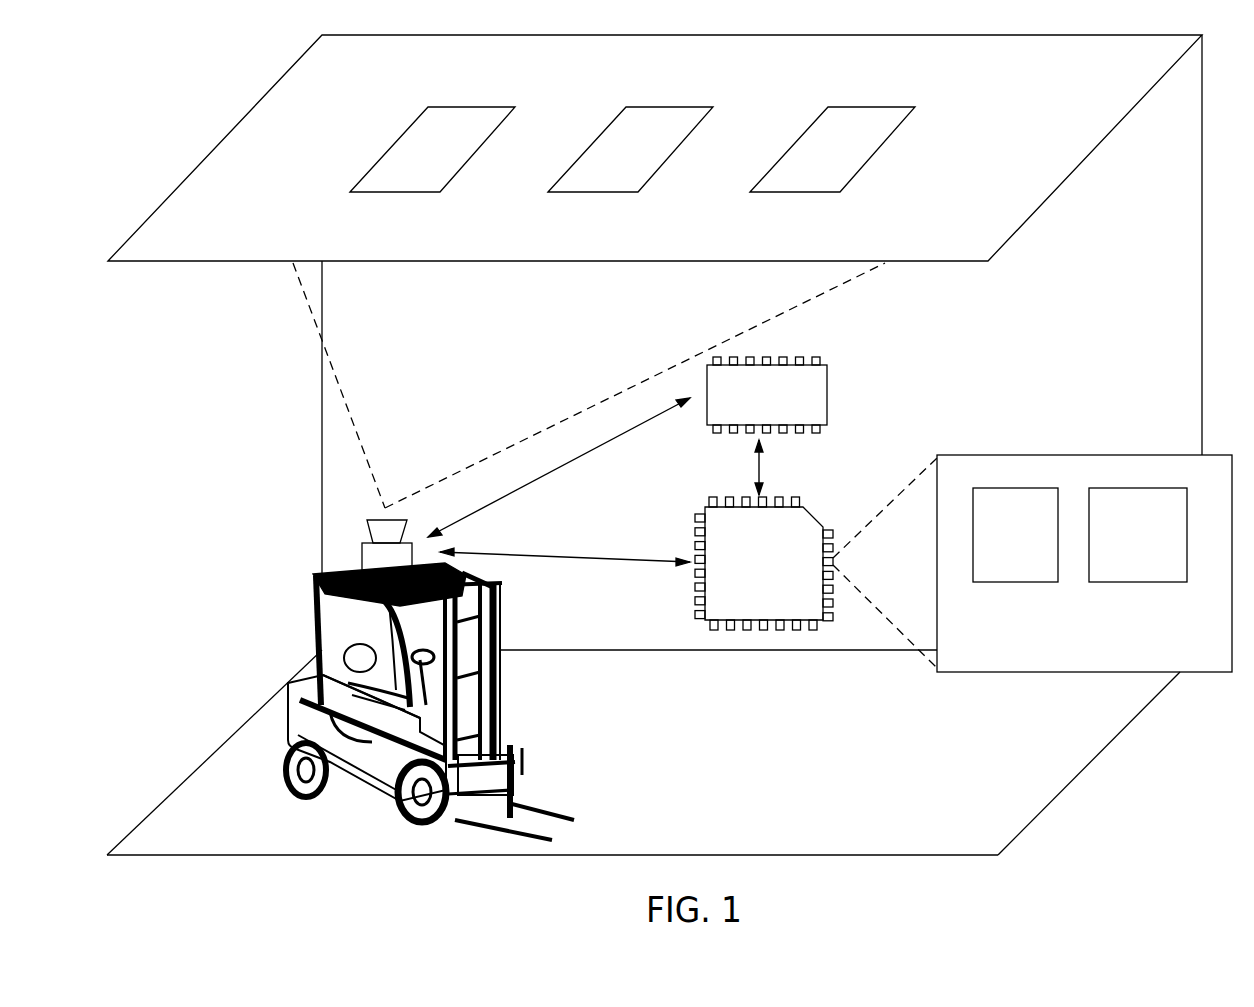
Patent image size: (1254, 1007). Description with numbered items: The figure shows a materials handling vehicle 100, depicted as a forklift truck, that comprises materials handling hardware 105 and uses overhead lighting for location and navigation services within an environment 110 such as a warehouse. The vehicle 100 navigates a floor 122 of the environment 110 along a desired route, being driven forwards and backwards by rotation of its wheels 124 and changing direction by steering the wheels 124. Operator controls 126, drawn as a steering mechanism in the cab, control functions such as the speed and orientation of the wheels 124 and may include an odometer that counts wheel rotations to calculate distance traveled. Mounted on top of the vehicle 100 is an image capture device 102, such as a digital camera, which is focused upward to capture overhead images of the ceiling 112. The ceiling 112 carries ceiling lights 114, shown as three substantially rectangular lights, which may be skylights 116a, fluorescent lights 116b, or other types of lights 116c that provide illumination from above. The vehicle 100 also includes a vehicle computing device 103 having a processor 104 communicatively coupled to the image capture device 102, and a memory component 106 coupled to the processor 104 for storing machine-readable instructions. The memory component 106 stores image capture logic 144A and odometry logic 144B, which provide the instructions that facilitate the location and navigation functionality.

The materials handling vehicle 100 is at (399, 670).
The image capture device 102 is at (365, 530).
The vehicle computing device 103 is at (362, 560).
The processor 104 is at (815, 395).
The materials handling hardware 105 is at (296, 571).
The memory component 106 is at (807, 520).
The environment 110 is at (193, 90).
The ceiling 112 is at (766, 88).
The ceiling lights 114 is at (392, 128).
The skylights 116a is at (405, 192).
The fluorescent lights 116b is at (597, 192).
The other types of lights 116c is at (803, 192).
The floor 122 is at (801, 787).
The wheels 124 is at (288, 784).
The operator controls 126 is at (408, 653).
The image capture logic 144A is at (1010, 583).
The odometry logic 144B is at (1127, 583).